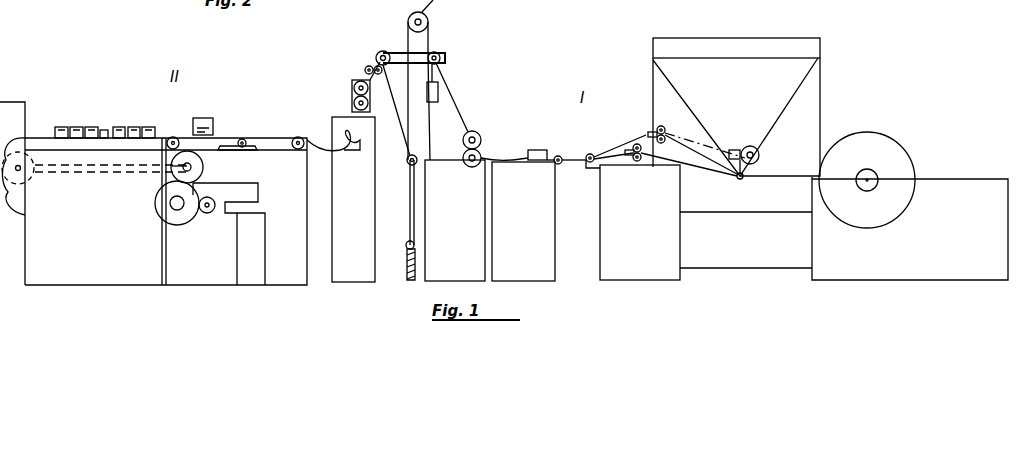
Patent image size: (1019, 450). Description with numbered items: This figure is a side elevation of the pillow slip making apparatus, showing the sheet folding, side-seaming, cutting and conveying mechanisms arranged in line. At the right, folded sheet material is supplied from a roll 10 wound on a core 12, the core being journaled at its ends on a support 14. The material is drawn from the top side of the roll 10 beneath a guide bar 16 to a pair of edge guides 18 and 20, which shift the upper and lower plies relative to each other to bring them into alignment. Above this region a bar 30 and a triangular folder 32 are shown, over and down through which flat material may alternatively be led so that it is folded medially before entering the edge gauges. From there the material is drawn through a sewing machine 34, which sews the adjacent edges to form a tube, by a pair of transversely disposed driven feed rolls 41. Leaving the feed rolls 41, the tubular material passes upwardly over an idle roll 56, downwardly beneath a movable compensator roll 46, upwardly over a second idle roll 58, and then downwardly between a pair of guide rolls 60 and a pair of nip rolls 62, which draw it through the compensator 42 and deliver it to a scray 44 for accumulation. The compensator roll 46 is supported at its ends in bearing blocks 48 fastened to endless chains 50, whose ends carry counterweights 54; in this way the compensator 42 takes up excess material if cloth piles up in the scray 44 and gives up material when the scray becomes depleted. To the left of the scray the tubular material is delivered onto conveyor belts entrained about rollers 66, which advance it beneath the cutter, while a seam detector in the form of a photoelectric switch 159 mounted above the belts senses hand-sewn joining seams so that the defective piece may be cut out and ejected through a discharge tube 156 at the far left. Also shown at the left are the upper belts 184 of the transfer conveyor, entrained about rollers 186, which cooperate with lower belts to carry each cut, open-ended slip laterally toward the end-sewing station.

The roll 10 is at (888, 210).
The core 12 is at (868, 195).
The support 14 is at (972, 268).
The guide bar 16 is at (736, 180).
The edge guide 18 is at (648, 133).
The edge guide 20 is at (634, 152).
The bar 30 is at (770, 38).
The triangular folder 32 is at (758, 114).
The sewing machine 34 is at (538, 150).
The feed rolls 41 is at (466, 160).
The compensator 42 is at (448, 33).
The scray 44 is at (353, 199).
The compensator roll 46 is at (409, 165).
The bearing blocks 48 is at (462, 140).
The endless chains 50 is at (408, 35).
The counterweights 54 is at (445, 92).
The idle roll 56 is at (440, 56).
The second idle roll 58 is at (378, 56).
The guide rolls 60 is at (364, 70).
The nip rolls 62 is at (352, 94).
The rollers 66 is at (174, 138).
The discharge tube 156 is at (14, 102).
The upper jaws 159 is at (208, 118).
The upper belts 184 is at (82, 130).
The rollers 186 is at (108, 129).